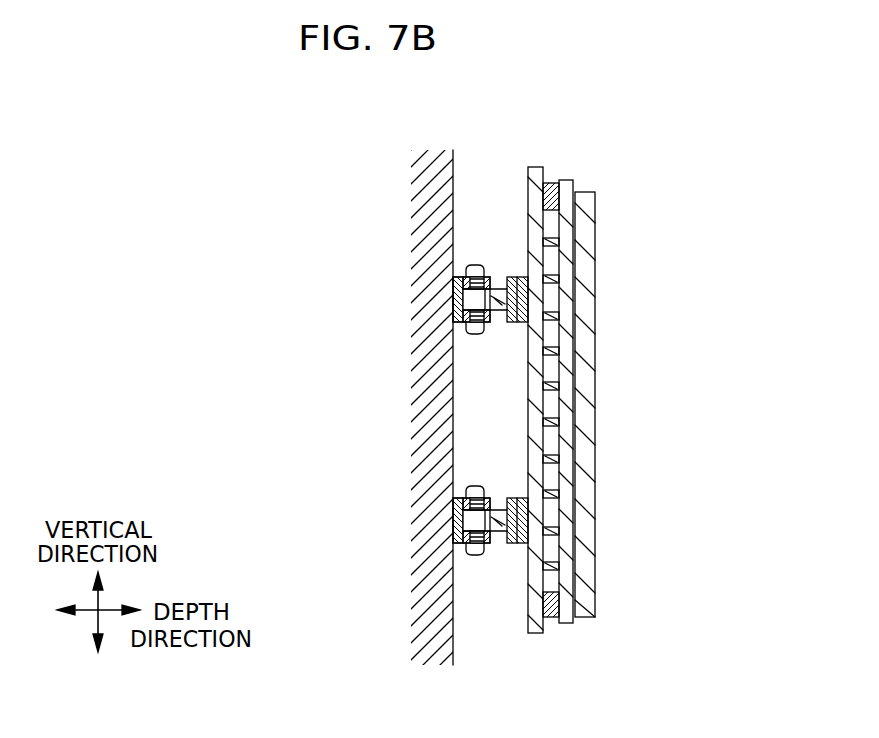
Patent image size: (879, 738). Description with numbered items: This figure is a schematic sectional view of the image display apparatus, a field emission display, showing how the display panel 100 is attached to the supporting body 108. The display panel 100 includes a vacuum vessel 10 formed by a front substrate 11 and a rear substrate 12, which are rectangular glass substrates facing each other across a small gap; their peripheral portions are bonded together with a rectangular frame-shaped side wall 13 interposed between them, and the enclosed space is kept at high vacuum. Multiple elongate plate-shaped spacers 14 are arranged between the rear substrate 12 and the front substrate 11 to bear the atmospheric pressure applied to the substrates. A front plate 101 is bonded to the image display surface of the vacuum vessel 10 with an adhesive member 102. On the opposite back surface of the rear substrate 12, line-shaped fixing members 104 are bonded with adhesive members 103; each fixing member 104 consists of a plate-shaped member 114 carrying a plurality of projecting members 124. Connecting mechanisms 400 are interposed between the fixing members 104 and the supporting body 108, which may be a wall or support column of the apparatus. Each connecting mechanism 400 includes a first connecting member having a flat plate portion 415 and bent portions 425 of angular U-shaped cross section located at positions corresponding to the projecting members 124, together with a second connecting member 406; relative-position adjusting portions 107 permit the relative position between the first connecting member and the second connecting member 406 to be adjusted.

The display panel 100 is at (596, 82).
The vacuum vessel 10 is at (572, 125).
The front substrate 11 is at (565, 624).
The rear substrate 12 is at (539, 166).
The side wall 13 is at (566, 182).
The spacers 14 is at (560, 566).
The front plate 101 is at (593, 584).
The adhesive member 102 is at (578, 193).
The adhesive members 103 is at (526, 277).
The fixing members 104 is at (406, 400).
The plate-shaped member 114 is at (499, 289).
The projecting members 124 is at (477, 265).
The relative-position adjusting portions 107 is at (465, 277).
The supporting body 108 is at (430, 338).
The connecting mechanisms 400 is at (493, 82).
The second connecting member 406 is at (392, 409).
The flat plate portion 415 is at (500, 311).
The bent portions 425 is at (453, 282).